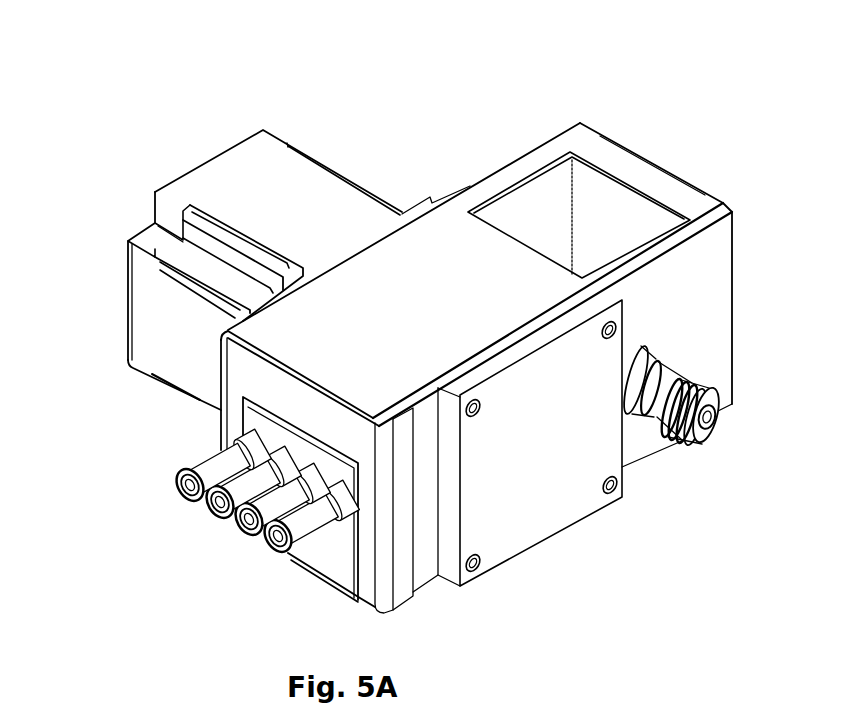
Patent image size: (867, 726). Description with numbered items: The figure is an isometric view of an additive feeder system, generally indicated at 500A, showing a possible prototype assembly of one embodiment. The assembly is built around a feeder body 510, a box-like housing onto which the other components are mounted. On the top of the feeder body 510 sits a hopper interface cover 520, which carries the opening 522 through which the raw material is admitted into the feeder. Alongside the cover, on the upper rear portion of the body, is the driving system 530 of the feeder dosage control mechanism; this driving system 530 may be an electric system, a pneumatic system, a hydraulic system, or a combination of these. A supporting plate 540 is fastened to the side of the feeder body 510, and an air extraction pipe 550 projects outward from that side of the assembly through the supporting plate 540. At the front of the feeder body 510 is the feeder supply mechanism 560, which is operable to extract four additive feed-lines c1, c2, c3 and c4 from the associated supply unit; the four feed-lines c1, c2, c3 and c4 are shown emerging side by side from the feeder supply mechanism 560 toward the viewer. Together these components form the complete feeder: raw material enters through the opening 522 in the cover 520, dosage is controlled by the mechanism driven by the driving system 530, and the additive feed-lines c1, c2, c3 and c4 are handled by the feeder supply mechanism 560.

The additive feeder system 500A is at (658, 50).
The feeder body 510 is at (708, 294).
The hopper interface cover 520 is at (522, 158).
The opening 522 is at (600, 205).
The driving system of the feeder dosage control mechanism 530 is at (303, 212).
The supporting plate 540 is at (583, 500).
The air extraction pipe 550 is at (716, 422).
The feeder supply mechanism 560 is at (272, 575).
The additive feed-line c1 is at (190, 485).
The additive feed-line c2 is at (220, 502).
The additive feed-line c3 is at (249, 519).
The additive feed-line c4 is at (278, 536).